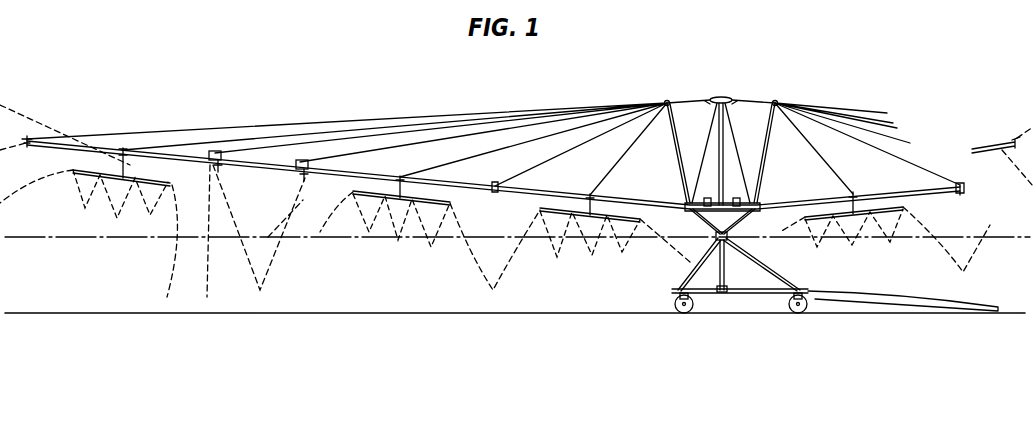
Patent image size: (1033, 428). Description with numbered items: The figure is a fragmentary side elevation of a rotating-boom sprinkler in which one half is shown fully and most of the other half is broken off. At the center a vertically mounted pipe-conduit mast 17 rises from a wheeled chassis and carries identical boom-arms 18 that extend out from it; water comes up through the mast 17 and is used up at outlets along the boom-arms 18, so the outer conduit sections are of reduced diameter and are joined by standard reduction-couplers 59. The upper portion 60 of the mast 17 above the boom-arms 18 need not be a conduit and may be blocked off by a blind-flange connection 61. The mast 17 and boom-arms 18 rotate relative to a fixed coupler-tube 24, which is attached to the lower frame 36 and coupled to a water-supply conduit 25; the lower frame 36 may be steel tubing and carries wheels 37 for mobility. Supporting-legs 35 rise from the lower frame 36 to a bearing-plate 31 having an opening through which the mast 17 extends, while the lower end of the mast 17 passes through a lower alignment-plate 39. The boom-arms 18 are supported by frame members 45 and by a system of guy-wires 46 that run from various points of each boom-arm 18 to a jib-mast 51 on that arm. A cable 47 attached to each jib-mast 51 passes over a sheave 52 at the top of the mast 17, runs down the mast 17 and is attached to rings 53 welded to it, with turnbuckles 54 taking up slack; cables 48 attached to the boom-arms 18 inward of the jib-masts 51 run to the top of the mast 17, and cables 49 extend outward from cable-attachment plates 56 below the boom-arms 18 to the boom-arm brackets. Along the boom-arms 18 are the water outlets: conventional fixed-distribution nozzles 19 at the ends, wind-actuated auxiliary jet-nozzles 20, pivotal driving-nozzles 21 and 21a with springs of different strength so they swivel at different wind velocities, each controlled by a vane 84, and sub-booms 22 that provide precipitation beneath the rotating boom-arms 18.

The mast 17 is at (724, 269).
The boom-arms 18 is at (900, 191).
The fixed-distribution nozzles 19 is at (27, 139).
The auxiliary jet-nozzles 20 is at (121, 150).
The pivotal driving-nozzles 21 is at (222, 161).
The driving-nozzle 21a is at (307, 168).
The sub-booms 22 is at (107, 163).
The coupler-tube 24 is at (760, 293).
The water-supply conduit 25 is at (872, 297).
The bearing-plate 31 is at (728, 238).
The supporting-legs 35 is at (703, 262).
The lower frame 36 is at (672, 300).
The wheels 37 is at (678, 314).
The lower alignment-plate 39 is at (717, 290).
The frame members 45 is at (740, 220).
The guy-wires 46 is at (478, 114).
The cable 47 is at (708, 101).
The cables 48 is at (716, 140).
The cables 49 is at (508, 199).
The jib-mast 51 is at (677, 149).
The sheave 52 is at (708, 103).
The rings 53 is at (709, 198).
The turnbuckles 54 is at (716, 162).
The cable-attachment plates 56 is at (706, 223).
The reduction-couplers 59 is at (493, 185).
The upper portion of the mast 60 is at (735, 140).
The blind-flange connection 61 is at (741, 193).
The vane 84 is at (214, 151).